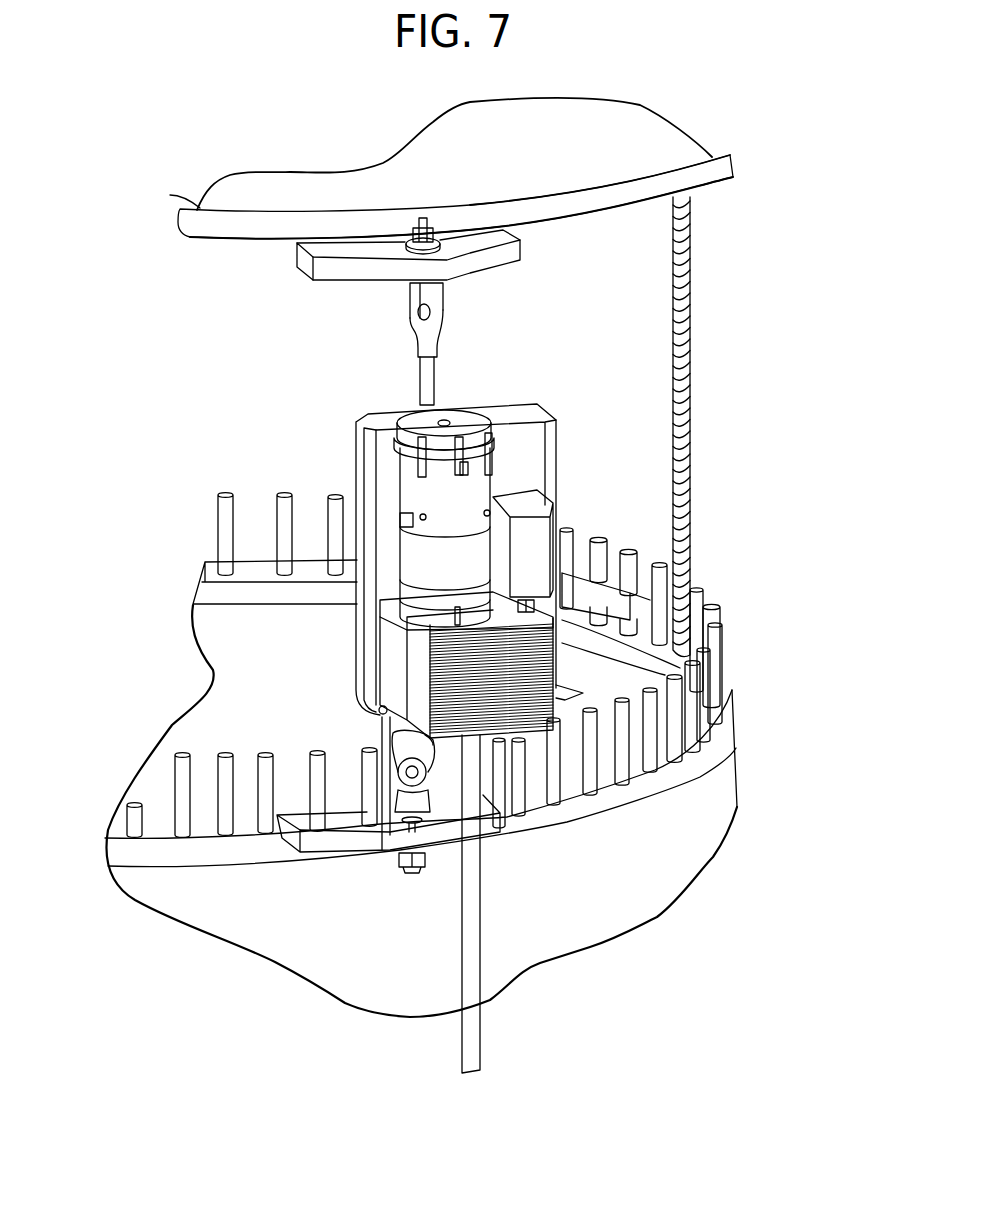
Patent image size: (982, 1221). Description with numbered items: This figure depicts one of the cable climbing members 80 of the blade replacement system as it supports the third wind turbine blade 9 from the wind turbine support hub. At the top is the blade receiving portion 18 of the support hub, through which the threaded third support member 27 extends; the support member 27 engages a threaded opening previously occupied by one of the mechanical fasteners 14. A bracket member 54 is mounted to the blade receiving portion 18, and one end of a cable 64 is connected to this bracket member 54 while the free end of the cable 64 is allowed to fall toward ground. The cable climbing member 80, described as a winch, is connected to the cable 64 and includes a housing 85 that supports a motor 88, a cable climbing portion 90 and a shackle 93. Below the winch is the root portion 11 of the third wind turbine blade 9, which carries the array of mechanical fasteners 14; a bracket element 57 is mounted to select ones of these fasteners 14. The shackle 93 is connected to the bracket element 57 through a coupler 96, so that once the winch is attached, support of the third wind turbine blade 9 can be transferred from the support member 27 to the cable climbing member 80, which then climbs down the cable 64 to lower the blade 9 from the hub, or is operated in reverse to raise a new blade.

The third wind turbine blade 9 is at (740, 742).
The root portion 11 is at (688, 783).
The mechanical fasteners 14 is at (268, 485).
The blade receiving portion 18 is at (218, 222).
The third support member 27 is at (690, 352).
The bracket member 54 is at (320, 297).
The bracket element 57 is at (338, 835).
The cable 64 is at (458, 360).
The cable climbing member 80 is at (348, 425).
The housing 85 is at (364, 599).
The motor 88 is at (473, 483).
The cable climbing portion 90 is at (388, 677).
The shackle 93 is at (425, 735).
The coupler 96 is at (400, 740).